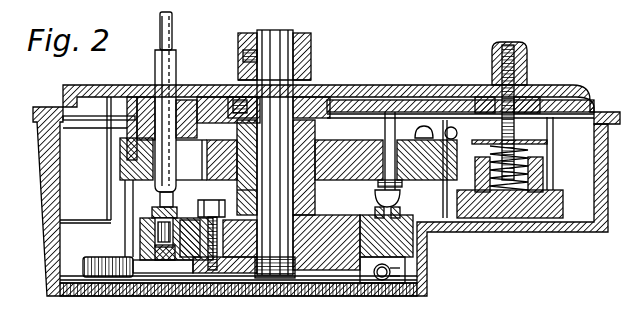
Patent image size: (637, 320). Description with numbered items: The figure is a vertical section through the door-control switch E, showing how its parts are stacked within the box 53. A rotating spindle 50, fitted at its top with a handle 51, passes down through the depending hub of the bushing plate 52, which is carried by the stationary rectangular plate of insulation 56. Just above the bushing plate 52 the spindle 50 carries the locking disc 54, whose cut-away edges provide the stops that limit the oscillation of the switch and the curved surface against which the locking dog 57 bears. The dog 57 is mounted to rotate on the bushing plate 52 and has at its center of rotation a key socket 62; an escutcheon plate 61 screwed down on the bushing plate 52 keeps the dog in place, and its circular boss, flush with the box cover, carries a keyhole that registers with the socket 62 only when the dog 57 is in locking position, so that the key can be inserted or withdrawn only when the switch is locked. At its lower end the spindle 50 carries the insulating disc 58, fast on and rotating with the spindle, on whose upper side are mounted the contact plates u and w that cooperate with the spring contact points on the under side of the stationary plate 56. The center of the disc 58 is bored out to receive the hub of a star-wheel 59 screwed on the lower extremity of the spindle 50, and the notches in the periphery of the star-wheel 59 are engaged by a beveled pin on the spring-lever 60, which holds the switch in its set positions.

The rotating spindle 50 is at (268, 33).
The handle 51 is at (311, 45).
The bushing plate 52 is at (356, 114).
The box 53 is at (44, 226).
The locking disc 54 is at (331, 104).
The rectangular plate of insulation 56 is at (120, 160).
The locking dog 57 is at (216, 96).
The insulating disc 58 is at (140, 243).
The star-wheel 59 is at (320, 272).
The spring-lever 60 is at (380, 284).
The escutcheon plate 61 is at (153, 86).
The key socket 62 is at (191, 160).
The contact plate u is at (150, 213).
The contact plate w is at (400, 213).
The control switch E is at (74, 160).